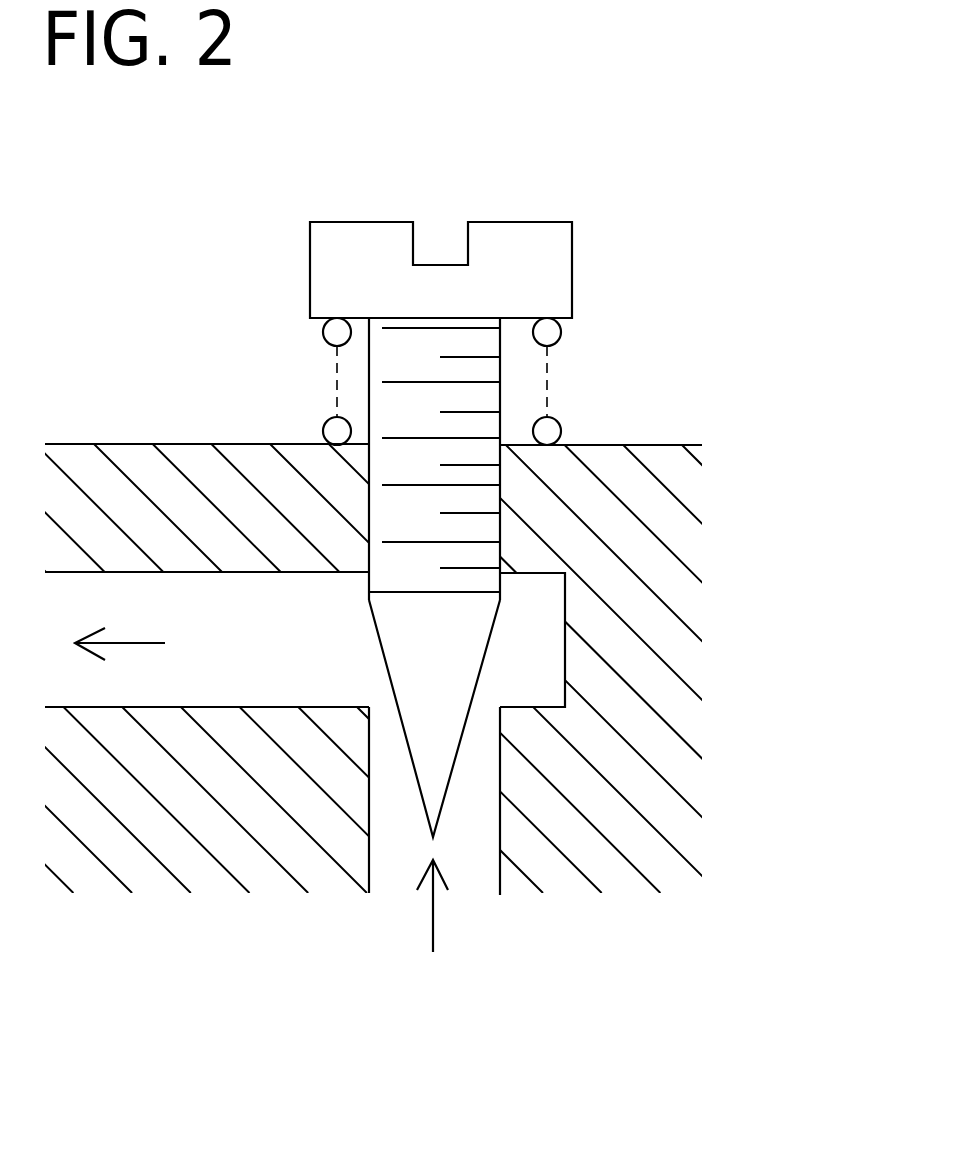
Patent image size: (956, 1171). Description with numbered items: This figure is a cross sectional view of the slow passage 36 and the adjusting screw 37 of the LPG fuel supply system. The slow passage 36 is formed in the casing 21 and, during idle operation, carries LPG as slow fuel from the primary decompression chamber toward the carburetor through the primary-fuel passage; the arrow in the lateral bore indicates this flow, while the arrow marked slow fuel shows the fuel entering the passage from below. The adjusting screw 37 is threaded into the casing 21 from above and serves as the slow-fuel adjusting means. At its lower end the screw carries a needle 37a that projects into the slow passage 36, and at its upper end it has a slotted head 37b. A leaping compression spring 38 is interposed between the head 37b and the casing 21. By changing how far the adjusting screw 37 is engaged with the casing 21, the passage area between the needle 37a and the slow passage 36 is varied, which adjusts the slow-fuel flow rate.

The casing 21 is at (658, 445).
The slow passage 36 is at (500, 772).
The adjusting screw 37 is at (576, 463).
The needle 37a is at (455, 645).
The head 37b is at (552, 278).
The leaping compression spring 38 is at (337, 333).